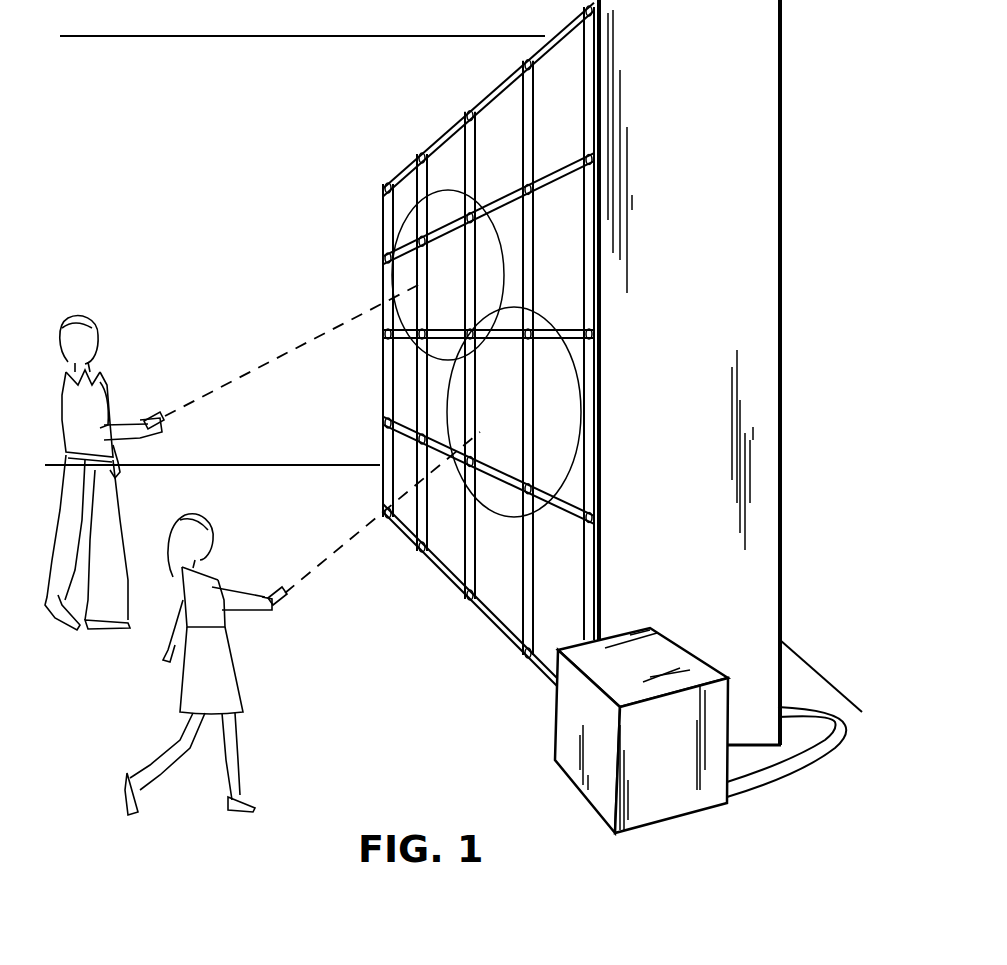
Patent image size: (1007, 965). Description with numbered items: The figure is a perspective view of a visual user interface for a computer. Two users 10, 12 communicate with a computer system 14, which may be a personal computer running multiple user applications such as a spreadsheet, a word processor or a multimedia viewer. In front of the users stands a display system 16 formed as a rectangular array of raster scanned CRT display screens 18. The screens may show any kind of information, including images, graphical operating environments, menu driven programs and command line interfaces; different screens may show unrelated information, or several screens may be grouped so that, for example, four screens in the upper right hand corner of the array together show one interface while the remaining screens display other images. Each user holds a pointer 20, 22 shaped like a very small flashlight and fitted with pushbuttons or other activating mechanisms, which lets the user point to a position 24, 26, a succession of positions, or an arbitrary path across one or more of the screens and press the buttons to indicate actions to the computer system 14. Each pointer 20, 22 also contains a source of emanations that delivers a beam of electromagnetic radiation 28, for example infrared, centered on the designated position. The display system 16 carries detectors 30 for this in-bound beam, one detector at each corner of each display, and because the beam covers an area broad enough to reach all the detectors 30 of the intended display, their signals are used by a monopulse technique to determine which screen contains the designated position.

The user 10 is at (120, 378).
The user 12 is at (250, 655).
The computer system 14 is at (683, 804).
The display system 16 is at (446, 107).
The CRT display screen 18 is at (573, 60).
The pointer 20 is at (164, 424).
The pointer 22 is at (286, 596).
The position 24 is at (447, 273).
The position 26 is at (487, 423).
The beam of electromagnetic radiation 28 is at (295, 338).
The detector 30 is at (525, 182).